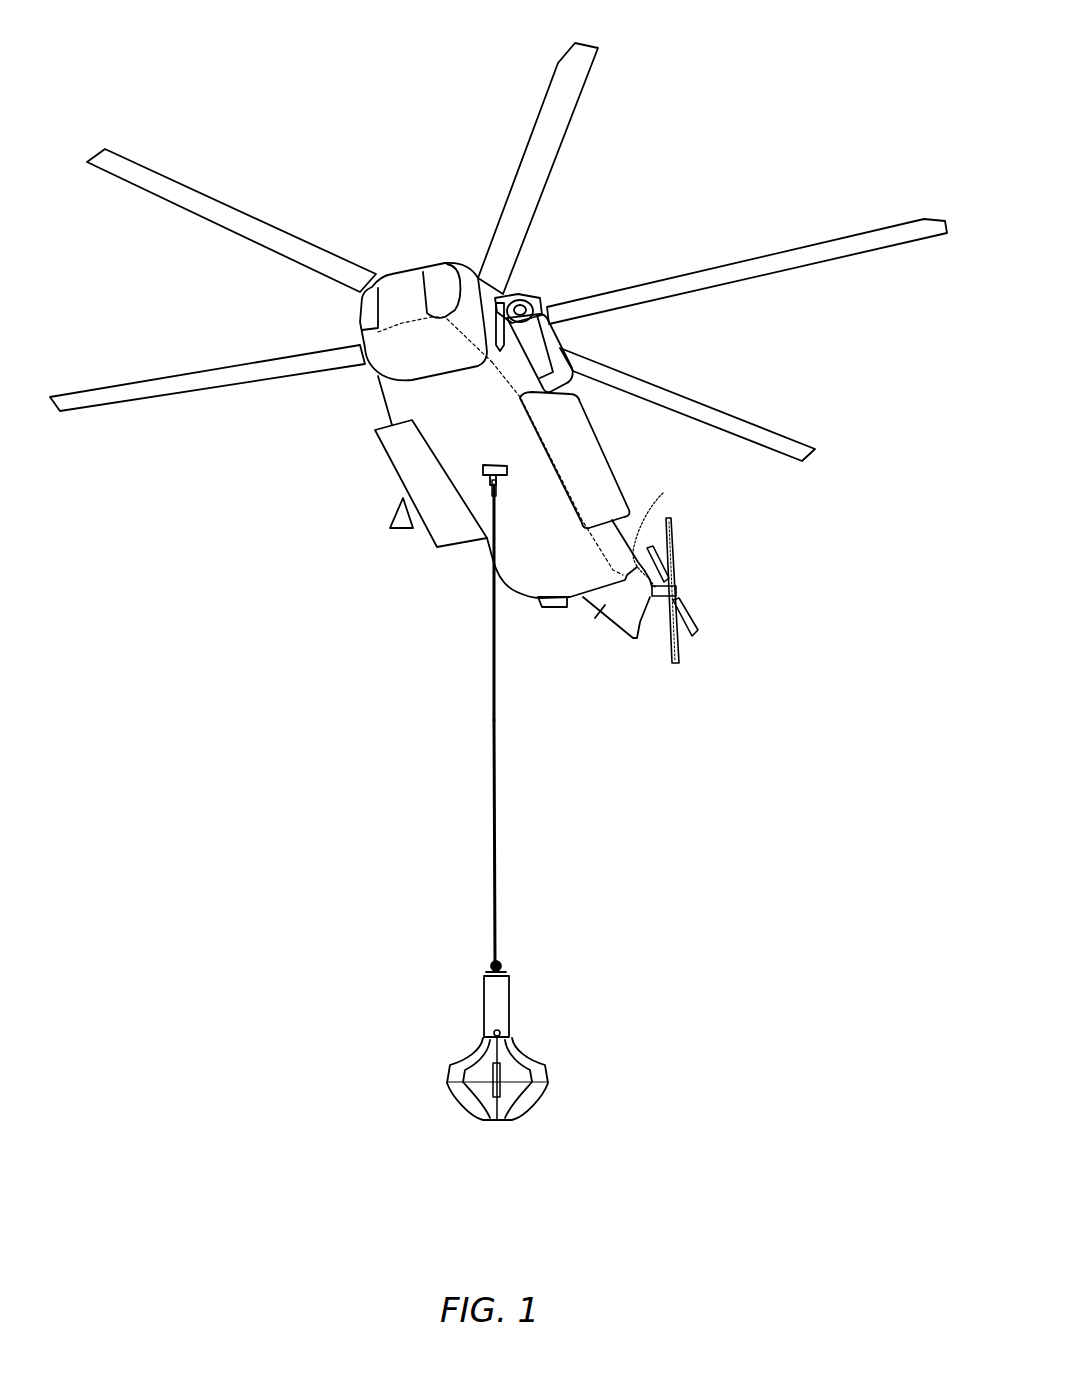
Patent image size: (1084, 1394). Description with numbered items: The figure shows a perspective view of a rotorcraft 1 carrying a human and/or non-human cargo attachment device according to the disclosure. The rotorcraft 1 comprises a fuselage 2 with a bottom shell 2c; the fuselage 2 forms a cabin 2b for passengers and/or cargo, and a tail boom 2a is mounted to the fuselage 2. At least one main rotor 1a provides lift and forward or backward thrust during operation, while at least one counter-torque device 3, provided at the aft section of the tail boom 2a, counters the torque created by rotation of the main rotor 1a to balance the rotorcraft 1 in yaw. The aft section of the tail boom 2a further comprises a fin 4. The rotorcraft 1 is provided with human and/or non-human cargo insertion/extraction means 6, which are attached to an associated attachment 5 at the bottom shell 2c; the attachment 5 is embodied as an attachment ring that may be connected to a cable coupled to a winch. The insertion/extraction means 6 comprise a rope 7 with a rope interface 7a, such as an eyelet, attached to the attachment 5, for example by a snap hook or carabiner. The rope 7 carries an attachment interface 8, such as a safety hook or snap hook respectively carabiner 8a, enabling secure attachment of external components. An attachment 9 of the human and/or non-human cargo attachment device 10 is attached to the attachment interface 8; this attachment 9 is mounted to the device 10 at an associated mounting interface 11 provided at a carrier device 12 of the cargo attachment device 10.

The rotorcraft 1 is at (195, 60).
The main rotor 1a is at (582, 116).
The fuselage 2 is at (478, 450).
The tail boom 2a is at (597, 623).
The cabin 2b is at (414, 260).
The bottom shell 2c is at (421, 383).
The counter-torque device 3 is at (695, 645).
The fin 4 is at (645, 530).
The attachment 5 is at (520, 472).
The human and/or non-human cargo insertion/extraction means 6 is at (485, 685).
The rope 7 is at (497, 740).
The rope interface 7a is at (484, 484).
The attachment interface 8 is at (488, 955).
The carabiner 8a is at (505, 957).
The attachment 9 is at (486, 970).
The human and/or non-human cargo attachment device 10 is at (548, 1106).
The mounting interface 11 is at (518, 972).
The carrier device 12 is at (511, 1010).